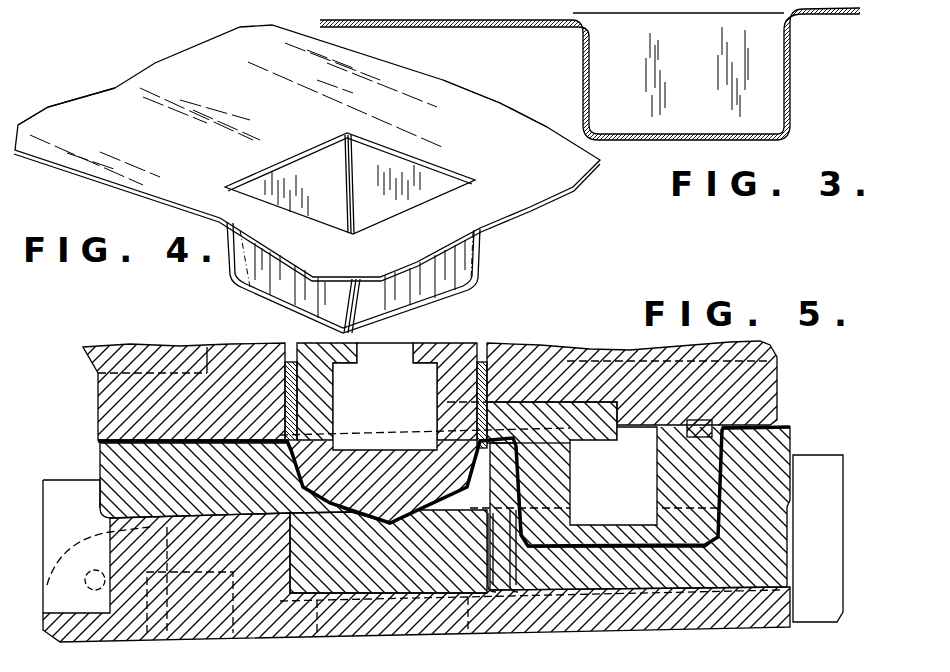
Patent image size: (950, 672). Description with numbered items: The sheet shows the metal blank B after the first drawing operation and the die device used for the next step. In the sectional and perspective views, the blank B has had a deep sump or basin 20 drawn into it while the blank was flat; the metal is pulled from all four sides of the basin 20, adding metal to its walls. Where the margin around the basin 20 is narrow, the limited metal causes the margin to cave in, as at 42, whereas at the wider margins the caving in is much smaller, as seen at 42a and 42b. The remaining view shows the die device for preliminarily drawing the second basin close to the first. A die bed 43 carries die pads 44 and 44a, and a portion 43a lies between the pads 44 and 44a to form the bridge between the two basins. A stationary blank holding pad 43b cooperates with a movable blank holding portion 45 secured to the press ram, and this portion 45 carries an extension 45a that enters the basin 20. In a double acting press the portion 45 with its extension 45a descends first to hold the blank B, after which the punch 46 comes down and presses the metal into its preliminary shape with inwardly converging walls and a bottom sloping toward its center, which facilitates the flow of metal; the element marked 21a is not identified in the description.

In FIG. 4, the blank B is at (151, 59).
In FIG. 3, the blank B is at (511, 28).
In FIG. 5, the blank B is at (262, 420).
In FIG. 4, the deep sump 20 is at (413, 177).
In FIG. 3, the deep sump 20 is at (762, 62).
In FIG. 4, the caved-in margin 42 is at (227, 257).
In FIG. 4, the caved-in margin portion 42a is at (500, 103).
In FIG. 4, the caved-in margin portion 42b is at (115, 88).
In FIG. 5, the movable blank holding portion 45 is at (107, 400).
In FIG. 5, the extension 45a is at (720, 457).
In FIG. 5, the punch 46 is at (458, 345).
In FIG. 5, the die bed 43 is at (643, 617).
In FIG. 5, the portion 43a is at (497, 470).
In FIG. 5, the stationary blank holding pad 43b is at (112, 460).
In FIG. 5, the die pad 44 is at (757, 570).
In FIG. 5, the die pad 44a is at (427, 577).
In FIG. 5, the base plate 21a is at (327, 598).